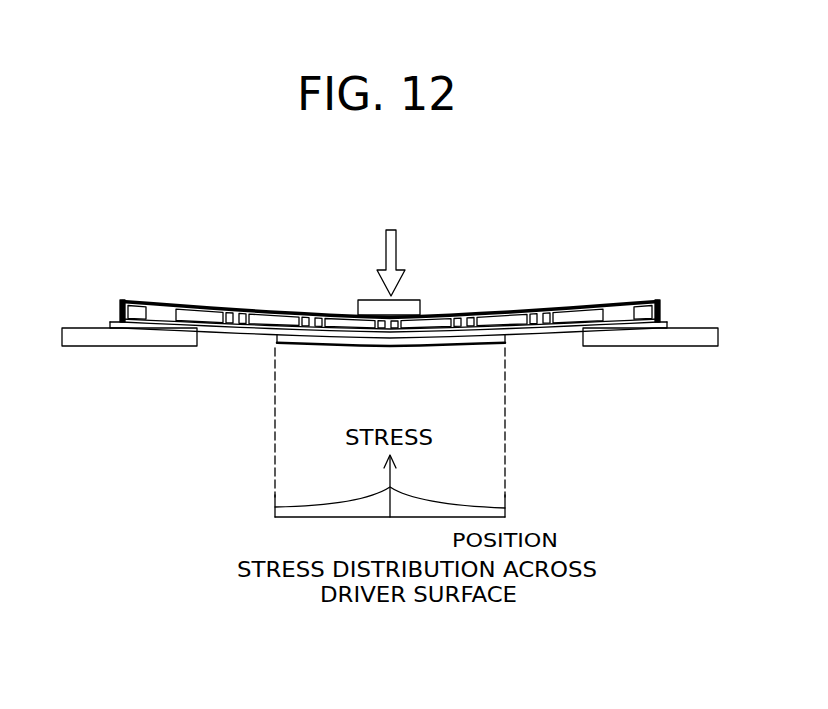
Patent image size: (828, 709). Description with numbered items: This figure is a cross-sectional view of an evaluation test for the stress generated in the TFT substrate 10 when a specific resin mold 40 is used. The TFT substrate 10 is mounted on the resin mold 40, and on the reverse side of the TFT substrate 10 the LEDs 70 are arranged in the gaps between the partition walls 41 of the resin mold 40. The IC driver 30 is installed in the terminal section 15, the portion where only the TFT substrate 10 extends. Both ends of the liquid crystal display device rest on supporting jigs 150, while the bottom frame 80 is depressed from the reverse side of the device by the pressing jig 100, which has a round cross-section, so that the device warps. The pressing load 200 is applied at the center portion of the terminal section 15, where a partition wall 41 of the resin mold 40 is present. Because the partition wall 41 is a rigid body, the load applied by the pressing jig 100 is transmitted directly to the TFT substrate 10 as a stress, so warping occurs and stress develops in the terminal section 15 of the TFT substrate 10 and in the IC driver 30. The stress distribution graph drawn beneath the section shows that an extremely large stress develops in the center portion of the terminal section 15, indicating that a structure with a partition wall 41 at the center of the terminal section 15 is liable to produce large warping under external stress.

The TFT substrate 10 is at (388, 358).
The terminal section 15 is at (545, 334).
The IC driver 30 is at (328, 344).
The resin mold 40 is at (132, 307).
The partition wall 41 is at (242, 308).
The LED 70 is at (195, 312).
The bottom frame 80 is at (121, 313).
The pressing jig 100 is at (370, 299).
The supporting jig 150 is at (84, 340).
The pressing force 200 is at (389, 244).